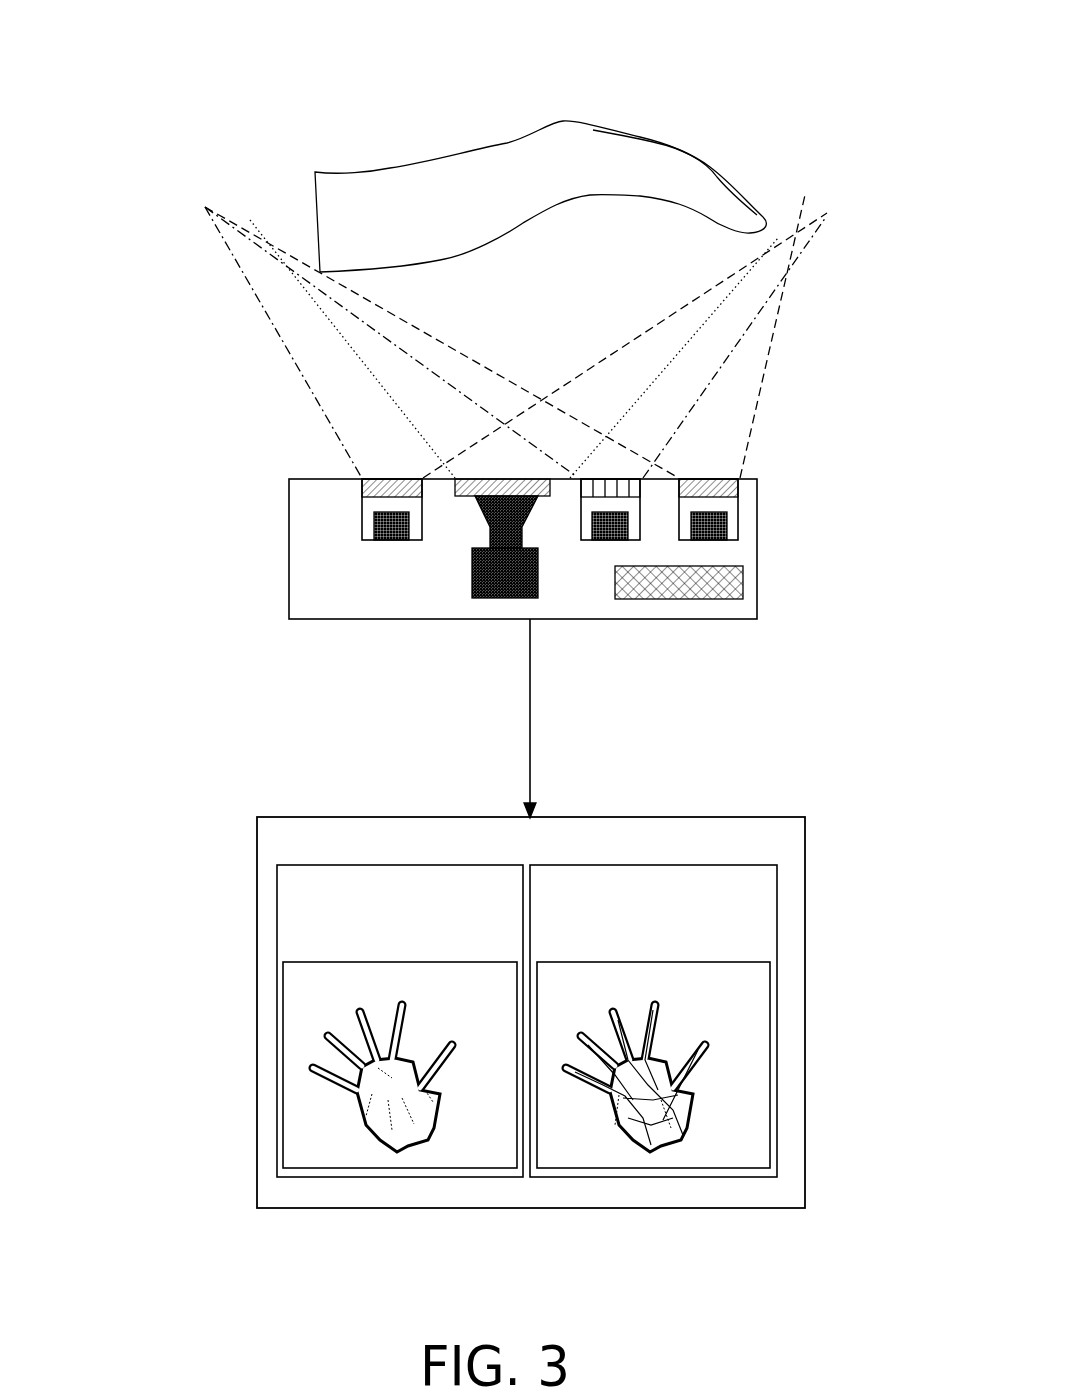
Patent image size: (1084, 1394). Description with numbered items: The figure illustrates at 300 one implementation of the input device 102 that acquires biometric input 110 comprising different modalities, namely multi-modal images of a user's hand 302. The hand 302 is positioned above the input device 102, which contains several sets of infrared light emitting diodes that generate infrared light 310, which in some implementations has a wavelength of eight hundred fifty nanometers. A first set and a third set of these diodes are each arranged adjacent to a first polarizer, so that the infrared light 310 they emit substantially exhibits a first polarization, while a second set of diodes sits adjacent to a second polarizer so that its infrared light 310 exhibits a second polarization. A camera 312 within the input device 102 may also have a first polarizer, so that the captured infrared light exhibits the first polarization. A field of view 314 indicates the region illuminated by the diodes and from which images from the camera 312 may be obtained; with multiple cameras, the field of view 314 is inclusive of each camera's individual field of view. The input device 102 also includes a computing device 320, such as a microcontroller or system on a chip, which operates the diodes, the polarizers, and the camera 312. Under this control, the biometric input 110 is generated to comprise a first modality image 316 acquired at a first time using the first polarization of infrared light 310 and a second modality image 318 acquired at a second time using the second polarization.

The implementation of the input device 300 is at (781, 48).
The hand 302 is at (520, 155).
The infrared light 310 is at (272, 327).
The field of view (FOV) 314 is at (663, 305).
The input device 102 is at (289, 536).
The camera 312 is at (473, 573).
The computing device 320 is at (680, 583).
The biometric input 110 is at (620, 851).
The first modality image 316 is at (513, 898).
The second modality image 318 is at (637, 926).